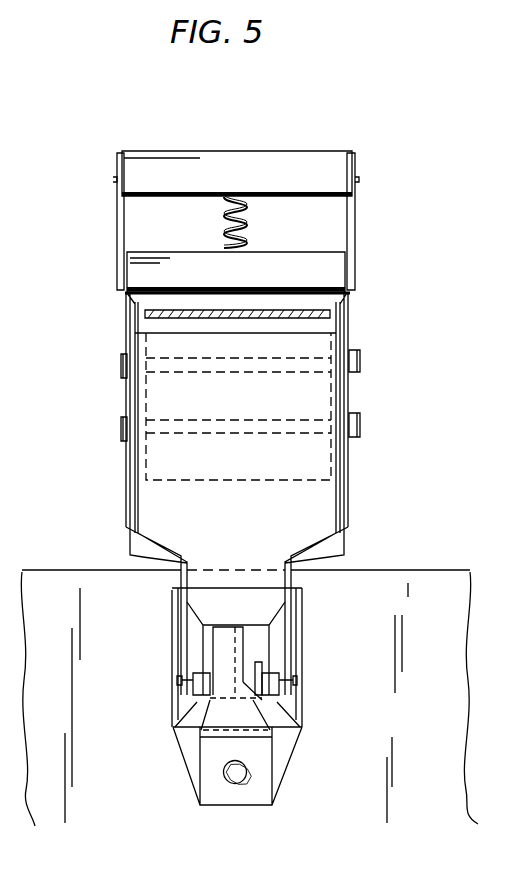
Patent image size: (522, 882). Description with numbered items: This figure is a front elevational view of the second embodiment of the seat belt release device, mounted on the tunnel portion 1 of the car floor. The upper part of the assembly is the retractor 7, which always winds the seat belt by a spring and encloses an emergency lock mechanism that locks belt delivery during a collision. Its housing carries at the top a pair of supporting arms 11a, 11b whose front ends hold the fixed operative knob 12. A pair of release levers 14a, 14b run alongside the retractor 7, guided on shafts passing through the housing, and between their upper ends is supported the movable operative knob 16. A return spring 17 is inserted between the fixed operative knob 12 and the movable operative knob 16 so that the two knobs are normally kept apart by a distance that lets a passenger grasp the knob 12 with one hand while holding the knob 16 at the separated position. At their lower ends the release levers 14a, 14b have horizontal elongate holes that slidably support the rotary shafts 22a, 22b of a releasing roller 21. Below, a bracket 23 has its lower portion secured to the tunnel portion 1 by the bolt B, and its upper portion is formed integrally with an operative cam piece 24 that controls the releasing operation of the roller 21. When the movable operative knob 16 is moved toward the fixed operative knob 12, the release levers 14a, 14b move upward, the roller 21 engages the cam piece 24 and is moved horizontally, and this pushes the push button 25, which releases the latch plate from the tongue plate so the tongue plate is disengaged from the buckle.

The tunnel portion of a car floor 1 is at (428, 570).
The retractor 7 is at (155, 480).
The supporting arm 11a is at (117, 233).
The supporting arm 11b is at (357, 216).
The fixed operative knob 12 is at (312, 178).
The release lever 14a is at (121, 401).
The release lever 14b is at (352, 398).
The movable operative knob 16 is at (330, 268).
The return spring 17 is at (248, 222).
The releasing roller 21 is at (253, 668).
The rotary shaft 22a is at (177, 692).
The rotary shaft 22b is at (295, 678).
The bracket 23 is at (265, 762).
The operative cam piece 24 is at (243, 640).
The push button 25 is at (258, 650).
The bolt B is at (243, 775).